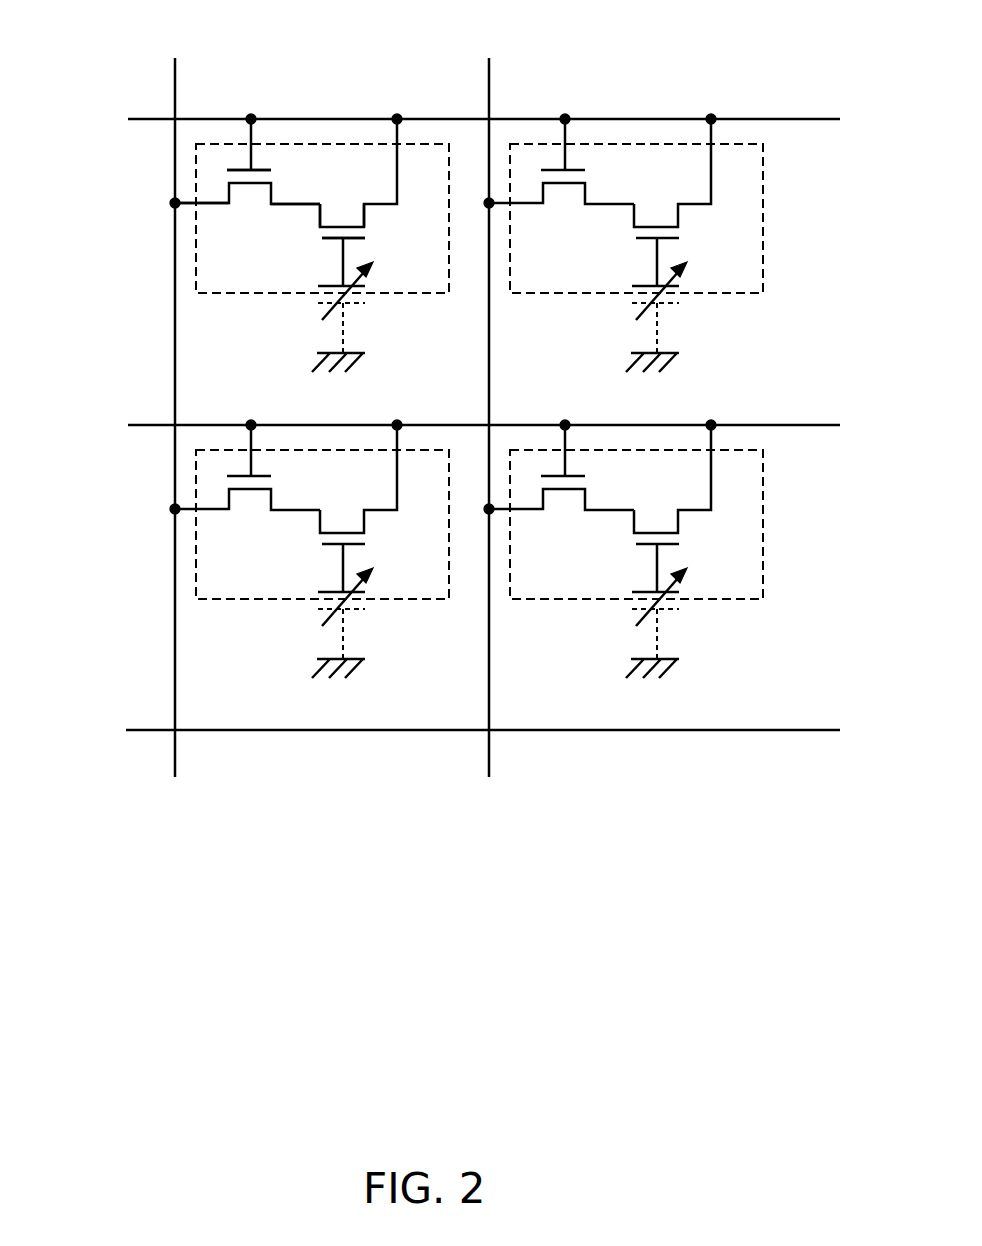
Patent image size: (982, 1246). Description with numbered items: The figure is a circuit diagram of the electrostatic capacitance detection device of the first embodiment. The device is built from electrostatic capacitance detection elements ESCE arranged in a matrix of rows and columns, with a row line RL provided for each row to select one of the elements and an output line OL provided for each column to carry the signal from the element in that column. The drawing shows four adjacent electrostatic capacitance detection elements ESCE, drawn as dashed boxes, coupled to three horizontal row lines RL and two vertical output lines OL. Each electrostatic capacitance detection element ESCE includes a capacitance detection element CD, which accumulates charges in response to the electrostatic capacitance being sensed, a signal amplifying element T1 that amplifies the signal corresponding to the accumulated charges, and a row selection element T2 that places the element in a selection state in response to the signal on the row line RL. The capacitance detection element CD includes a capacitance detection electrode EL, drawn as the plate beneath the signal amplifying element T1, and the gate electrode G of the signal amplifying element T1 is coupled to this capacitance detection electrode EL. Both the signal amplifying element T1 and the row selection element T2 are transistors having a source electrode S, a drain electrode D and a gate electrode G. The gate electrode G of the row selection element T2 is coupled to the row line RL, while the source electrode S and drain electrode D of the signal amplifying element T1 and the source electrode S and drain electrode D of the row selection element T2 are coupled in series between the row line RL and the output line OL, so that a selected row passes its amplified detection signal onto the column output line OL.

The signal amplifying element T1 is at (342, 218).
The row selection element T2 is at (248, 200).
The capacitance detection electrode EL is at (492, 469).
The capacitance detection element CD is at (379, 283).
The electrostatic capacitance detection element ESCE is at (412, 297).
The gate electrode G is at (296, 205).
The drain electrode D is at (247, 206).
The source electrode S is at (326, 206).
The output line OL is at (343, 390).
The row line RL is at (444, 414).